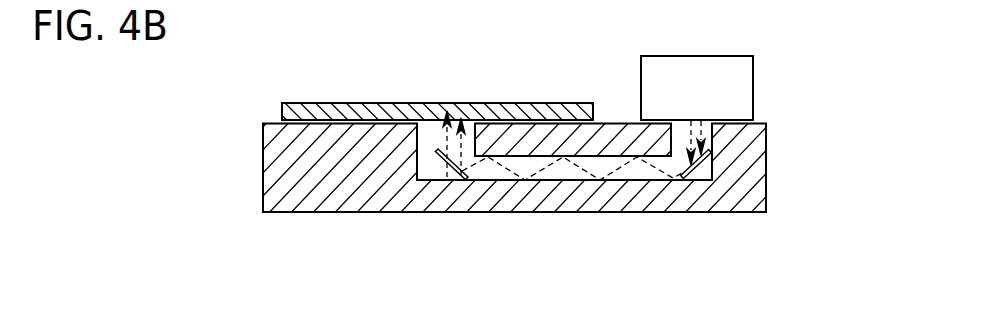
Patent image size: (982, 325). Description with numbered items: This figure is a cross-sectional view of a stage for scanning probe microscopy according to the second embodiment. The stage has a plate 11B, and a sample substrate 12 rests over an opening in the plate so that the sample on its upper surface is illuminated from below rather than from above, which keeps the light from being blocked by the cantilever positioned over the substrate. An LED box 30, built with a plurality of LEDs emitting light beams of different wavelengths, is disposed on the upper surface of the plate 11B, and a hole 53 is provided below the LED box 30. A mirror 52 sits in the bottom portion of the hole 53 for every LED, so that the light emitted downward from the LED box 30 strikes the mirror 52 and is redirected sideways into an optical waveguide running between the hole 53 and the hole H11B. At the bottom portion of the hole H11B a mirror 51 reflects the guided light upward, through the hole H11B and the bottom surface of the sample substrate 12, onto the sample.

The sample substrate 12 is at (282, 108).
The plate 11B is at (263, 188).
The hole H11B is at (430, 165).
The LED box 30 is at (755, 83).
The mirror 51 is at (448, 176).
The mirror 52 is at (702, 167).
The hole 53 is at (705, 163).